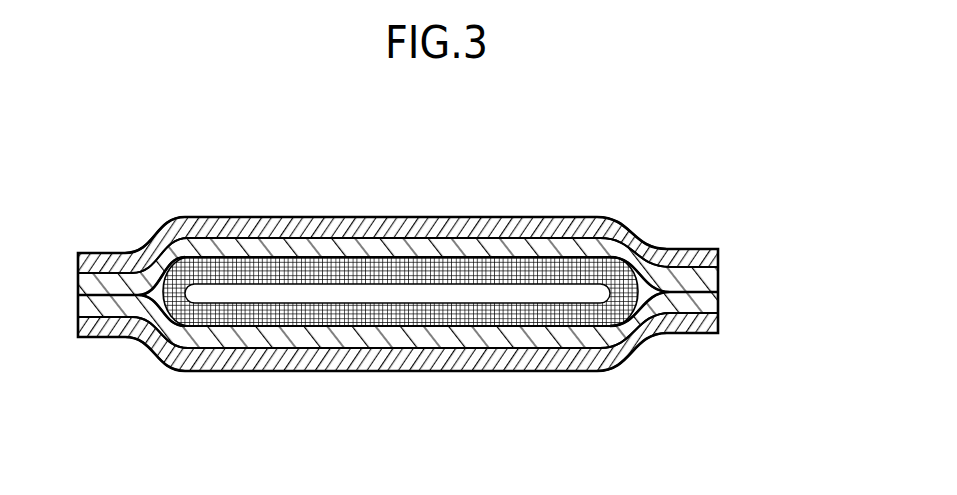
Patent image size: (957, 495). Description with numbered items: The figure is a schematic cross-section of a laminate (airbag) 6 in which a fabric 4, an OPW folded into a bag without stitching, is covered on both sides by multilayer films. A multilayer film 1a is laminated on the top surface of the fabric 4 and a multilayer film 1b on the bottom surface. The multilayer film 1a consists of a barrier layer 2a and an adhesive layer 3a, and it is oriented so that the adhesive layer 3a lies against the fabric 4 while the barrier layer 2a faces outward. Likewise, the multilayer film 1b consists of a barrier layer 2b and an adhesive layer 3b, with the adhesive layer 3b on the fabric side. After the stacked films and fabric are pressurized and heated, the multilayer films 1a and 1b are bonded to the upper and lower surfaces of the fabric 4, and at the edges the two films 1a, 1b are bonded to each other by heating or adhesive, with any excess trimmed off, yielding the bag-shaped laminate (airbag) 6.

The laminate (airbag) 6 is at (463, 225).
The fabric 4 is at (601, 256).
The multilayer film 1a is at (463, 256).
The multilayer film 1b is at (463, 331).
The barrier layer 2a is at (712, 258).
The adhesive layer 3a is at (790, 230).
The barrier layer 2b is at (790, 295).
The adhesive layer 3b is at (706, 300).